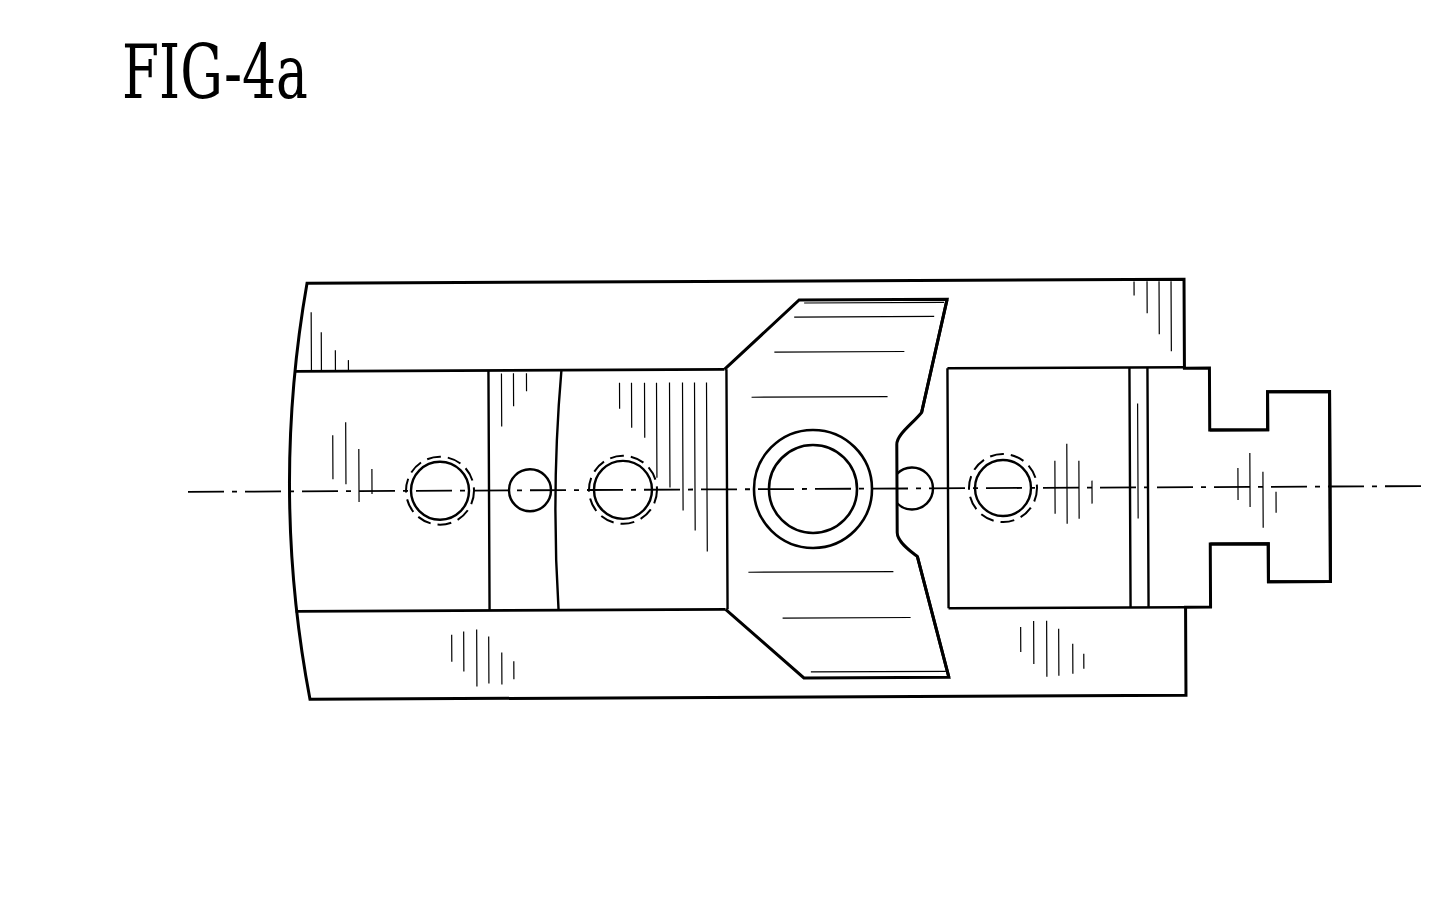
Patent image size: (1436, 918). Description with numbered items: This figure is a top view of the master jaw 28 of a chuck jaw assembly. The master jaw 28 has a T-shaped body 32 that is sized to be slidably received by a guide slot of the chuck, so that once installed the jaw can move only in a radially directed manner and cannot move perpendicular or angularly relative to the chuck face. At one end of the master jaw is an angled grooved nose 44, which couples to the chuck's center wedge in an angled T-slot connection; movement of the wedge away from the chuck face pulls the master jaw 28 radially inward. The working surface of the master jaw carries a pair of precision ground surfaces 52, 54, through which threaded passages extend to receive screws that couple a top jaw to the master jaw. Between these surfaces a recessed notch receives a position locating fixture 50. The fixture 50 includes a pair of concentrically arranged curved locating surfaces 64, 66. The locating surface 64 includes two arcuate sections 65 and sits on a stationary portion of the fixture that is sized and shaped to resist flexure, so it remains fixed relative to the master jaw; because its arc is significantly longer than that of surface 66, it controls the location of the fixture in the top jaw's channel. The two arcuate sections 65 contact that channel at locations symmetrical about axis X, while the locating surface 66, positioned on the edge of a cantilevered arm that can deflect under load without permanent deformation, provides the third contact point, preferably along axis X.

The master jaw 28 is at (271, 261).
The T-shaped body 32 is at (390, 318).
The angled grooved nose 44 is at (1266, 410).
The position locating fixture 50 is at (736, 659).
The precision ground surface 52 is at (402, 570).
The precision ground surface 54 is at (1057, 562).
The curved locating surface 64 is at (964, 341).
The arcuate sections 65 is at (950, 318).
The curved locating surface 66 is at (557, 572).
The axis X is at (1414, 487).